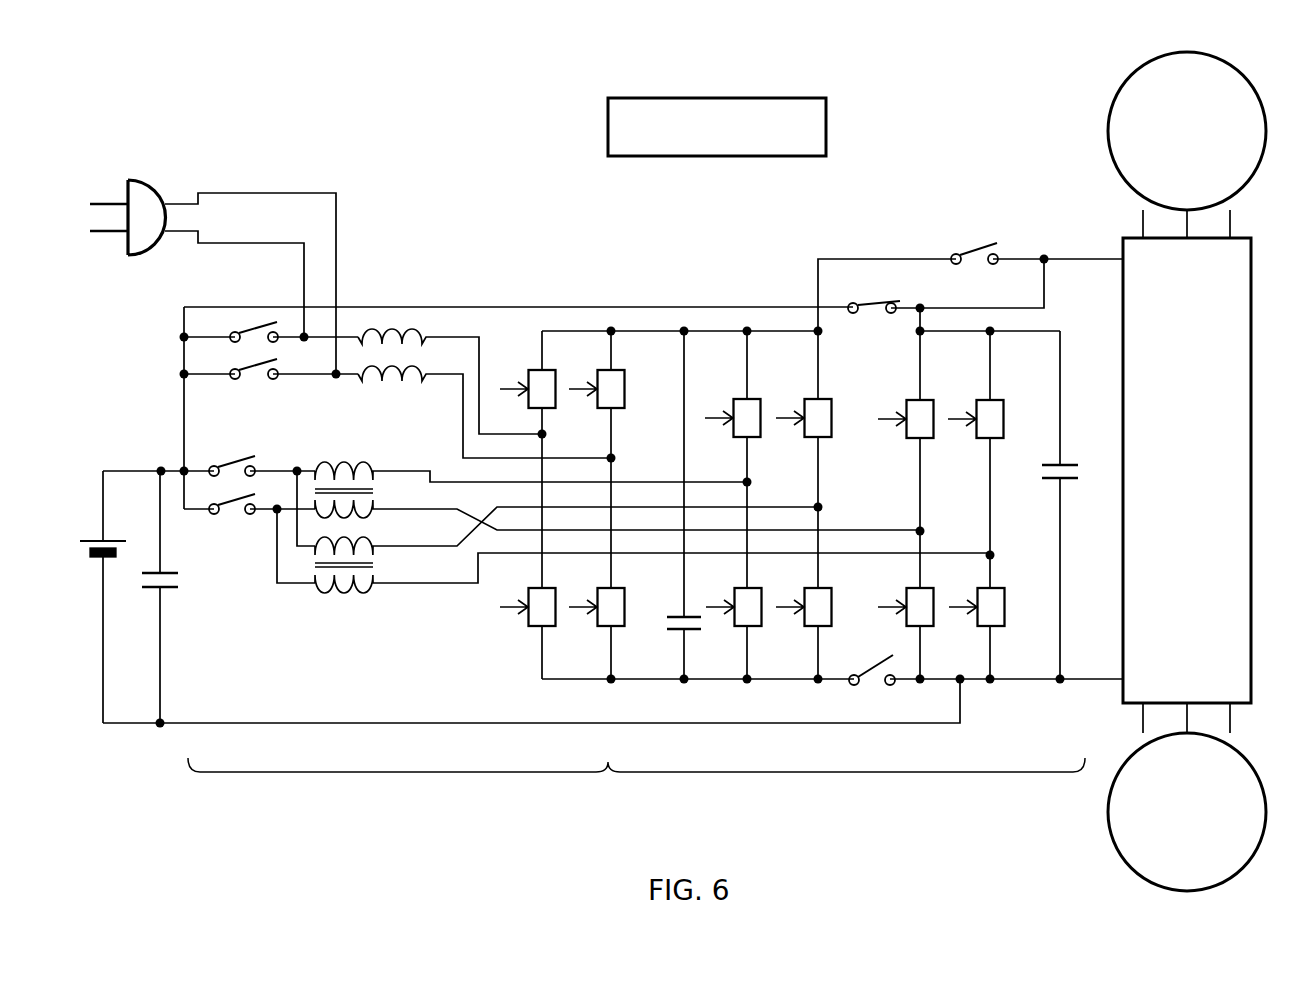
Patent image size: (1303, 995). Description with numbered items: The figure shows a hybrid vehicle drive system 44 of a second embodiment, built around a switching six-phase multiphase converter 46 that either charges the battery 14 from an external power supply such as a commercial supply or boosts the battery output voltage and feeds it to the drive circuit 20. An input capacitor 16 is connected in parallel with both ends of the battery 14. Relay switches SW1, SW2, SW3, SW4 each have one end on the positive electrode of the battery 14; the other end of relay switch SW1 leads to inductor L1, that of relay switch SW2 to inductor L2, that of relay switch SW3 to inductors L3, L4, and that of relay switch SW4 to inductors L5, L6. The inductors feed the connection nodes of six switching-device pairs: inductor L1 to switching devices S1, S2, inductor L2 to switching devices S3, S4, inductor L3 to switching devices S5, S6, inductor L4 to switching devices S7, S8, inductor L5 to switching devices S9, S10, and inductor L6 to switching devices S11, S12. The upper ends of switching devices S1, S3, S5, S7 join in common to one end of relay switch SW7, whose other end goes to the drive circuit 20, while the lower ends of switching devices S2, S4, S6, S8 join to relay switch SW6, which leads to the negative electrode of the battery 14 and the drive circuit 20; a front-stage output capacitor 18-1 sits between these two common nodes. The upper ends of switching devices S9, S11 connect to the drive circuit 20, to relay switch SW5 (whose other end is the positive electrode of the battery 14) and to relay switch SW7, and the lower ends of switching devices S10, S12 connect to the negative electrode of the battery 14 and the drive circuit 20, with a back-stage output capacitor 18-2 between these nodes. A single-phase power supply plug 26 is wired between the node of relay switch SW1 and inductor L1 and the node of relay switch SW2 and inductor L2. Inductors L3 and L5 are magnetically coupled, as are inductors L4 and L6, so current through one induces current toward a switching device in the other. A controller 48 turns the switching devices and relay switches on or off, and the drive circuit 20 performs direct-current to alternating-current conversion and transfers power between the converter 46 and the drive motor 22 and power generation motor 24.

The battery 14 is at (96, 541).
The input capacitor 16 is at (170, 589).
The front-stage output capacitor 18-1 is at (676, 630).
The back-stage output capacitor 18-2 is at (1068, 480).
The drive circuit 20 is at (1121, 400).
The drive motor 22 is at (1110, 105).
The power generation motor 24 is at (1116, 853).
The single-phase power supply plug 26 is at (147, 181).
The hybrid vehicle drive system 44 is at (177, 127).
The switching six-phase multiphase converter 46 is at (608, 774).
The controller 48 is at (753, 98).
The inductor L1 is at (395, 334).
The inductor L2 is at (412, 375).
The inductor L3 is at (350, 466).
The inductor L4 is at (359, 543).
The inductor L5 is at (376, 503).
The inductor L6 is at (375, 579).
The switching device S1 is at (553, 371).
The switching device S2 is at (528, 627).
The switching device S3 is at (622, 371).
The switching device S4 is at (606, 627).
The switching device S5 is at (760, 399).
The switching device S6 is at (755, 627).
The switching device S7 is at (831, 399).
The switching device S8 is at (832, 588).
The switching device S9 is at (933, 400).
The switching device S10 is at (930, 627).
The switching device S11 is at (1003, 400).
The switching device S12 is at (1003, 627).
The relay switch SW1 is at (251, 327).
The relay switch SW2 is at (251, 368).
The relay switch SW3 is at (233, 457).
The relay switch SW4 is at (238, 512).
The relay switch SW5 is at (875, 301).
The relay switch SW6 is at (870, 668).
The relay switch SW7 is at (972, 249).